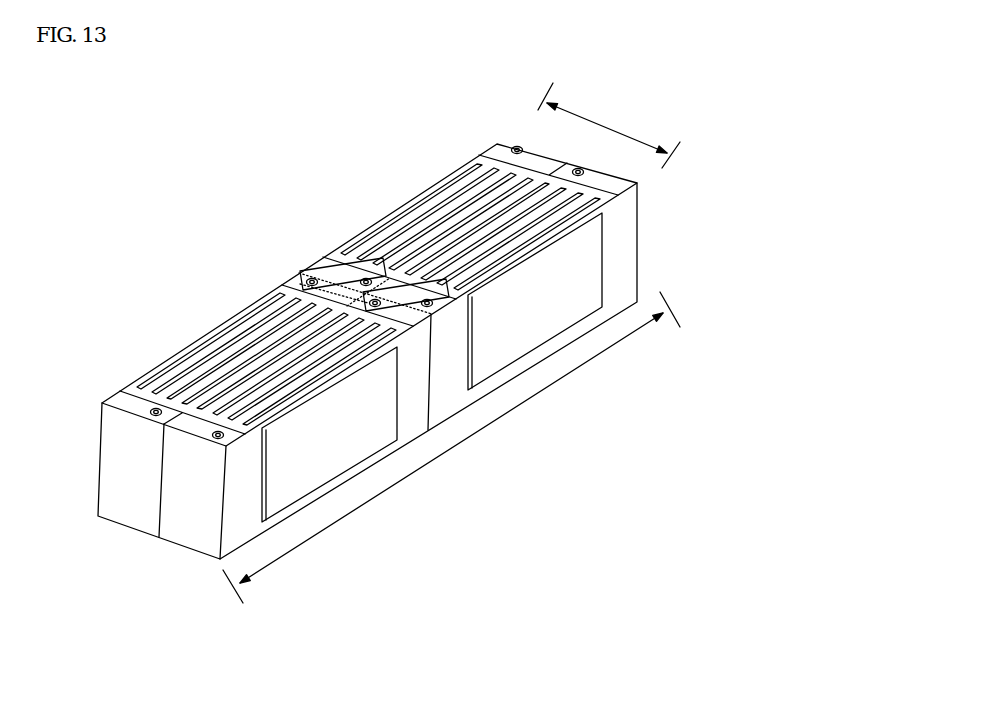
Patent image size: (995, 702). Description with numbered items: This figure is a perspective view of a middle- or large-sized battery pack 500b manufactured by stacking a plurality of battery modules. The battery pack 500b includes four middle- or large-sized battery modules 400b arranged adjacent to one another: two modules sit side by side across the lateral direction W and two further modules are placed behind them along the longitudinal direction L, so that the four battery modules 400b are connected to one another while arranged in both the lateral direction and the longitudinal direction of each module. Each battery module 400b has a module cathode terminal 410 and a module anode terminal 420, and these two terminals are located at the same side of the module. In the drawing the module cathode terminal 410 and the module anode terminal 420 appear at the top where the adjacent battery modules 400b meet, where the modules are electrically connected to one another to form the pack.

The middle- or large-sized battery pack 500b is at (112, 94).
The middle- or large-sized battery module 400b is at (367, 222).
The module cathode terminal 410 is at (302, 275).
The module anode terminal 420 is at (343, 250).